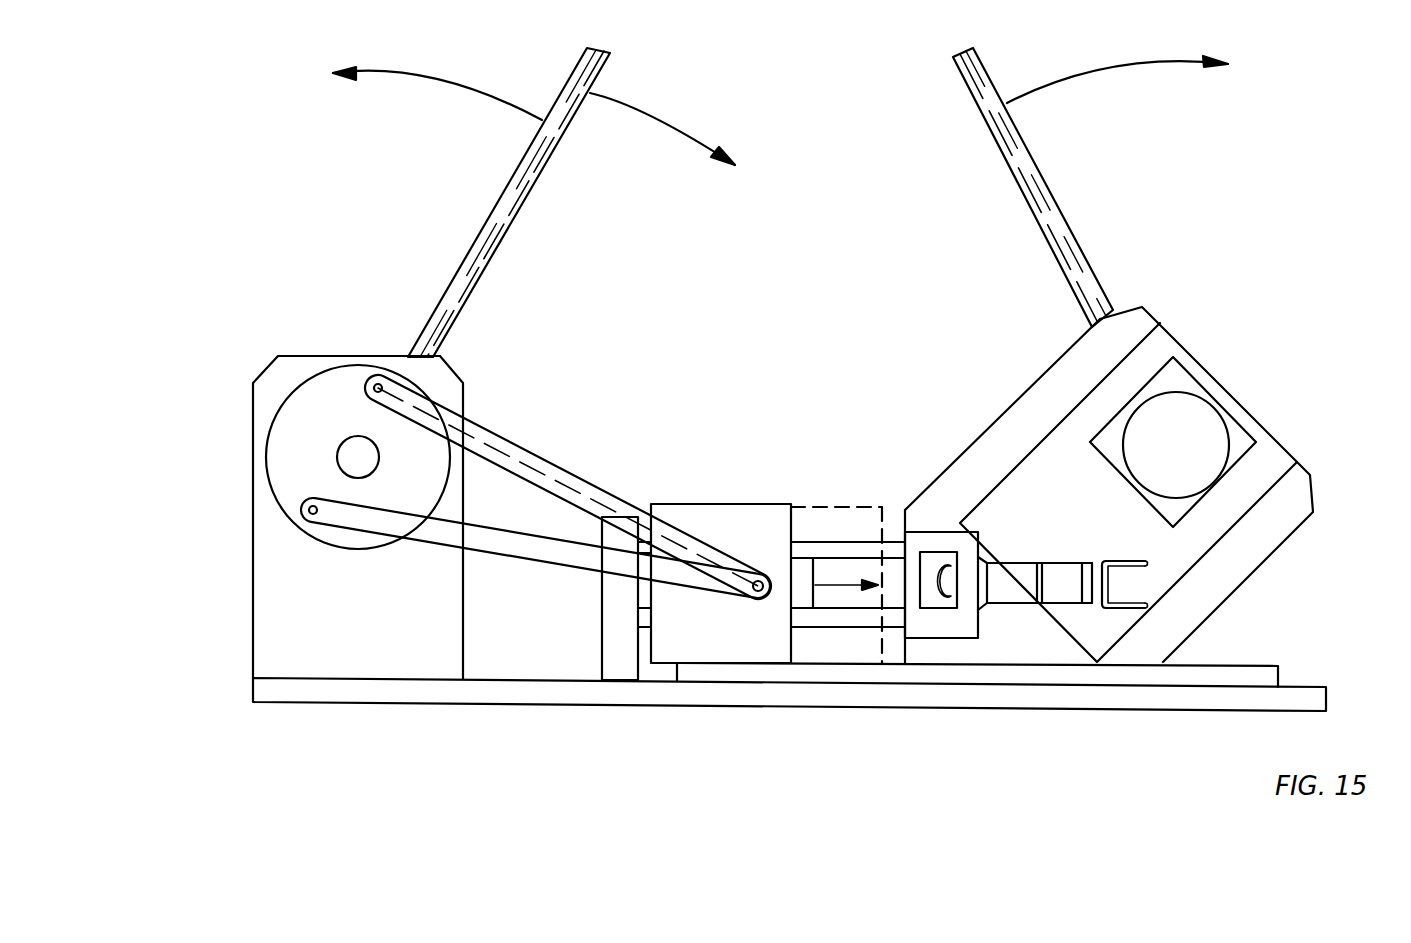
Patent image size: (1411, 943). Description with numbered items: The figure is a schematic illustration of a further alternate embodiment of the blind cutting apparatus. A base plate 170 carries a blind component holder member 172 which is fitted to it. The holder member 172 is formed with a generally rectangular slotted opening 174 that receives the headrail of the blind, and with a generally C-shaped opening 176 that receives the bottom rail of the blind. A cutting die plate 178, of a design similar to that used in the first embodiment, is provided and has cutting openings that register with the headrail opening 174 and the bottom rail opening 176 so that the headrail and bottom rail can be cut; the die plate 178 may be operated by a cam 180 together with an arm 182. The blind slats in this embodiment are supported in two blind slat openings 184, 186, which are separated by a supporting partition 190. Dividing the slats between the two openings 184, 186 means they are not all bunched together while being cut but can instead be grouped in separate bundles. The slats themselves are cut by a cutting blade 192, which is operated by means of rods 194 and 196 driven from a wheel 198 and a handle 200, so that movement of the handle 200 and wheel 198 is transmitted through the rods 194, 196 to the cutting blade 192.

The base plate 170 is at (735, 693).
The blind component holder member 172 is at (1265, 535).
The slotted opening 174 is at (1120, 567).
The C-shaped opening 176 is at (935, 567).
The cutting die plate 178 is at (1068, 457).
The cam 180 is at (1195, 420).
The arm 182 is at (1043, 170).
The blind slat opening 184 is at (1062, 588).
The blind slat opening 186 is at (1003, 592).
The supporting partition 190 is at (1033, 584).
The cutting blade 192 is at (983, 578).
The rod 194 is at (825, 540).
The rod 196 is at (510, 527).
The wheel 198 is at (338, 397).
The handle 200 is at (500, 197).